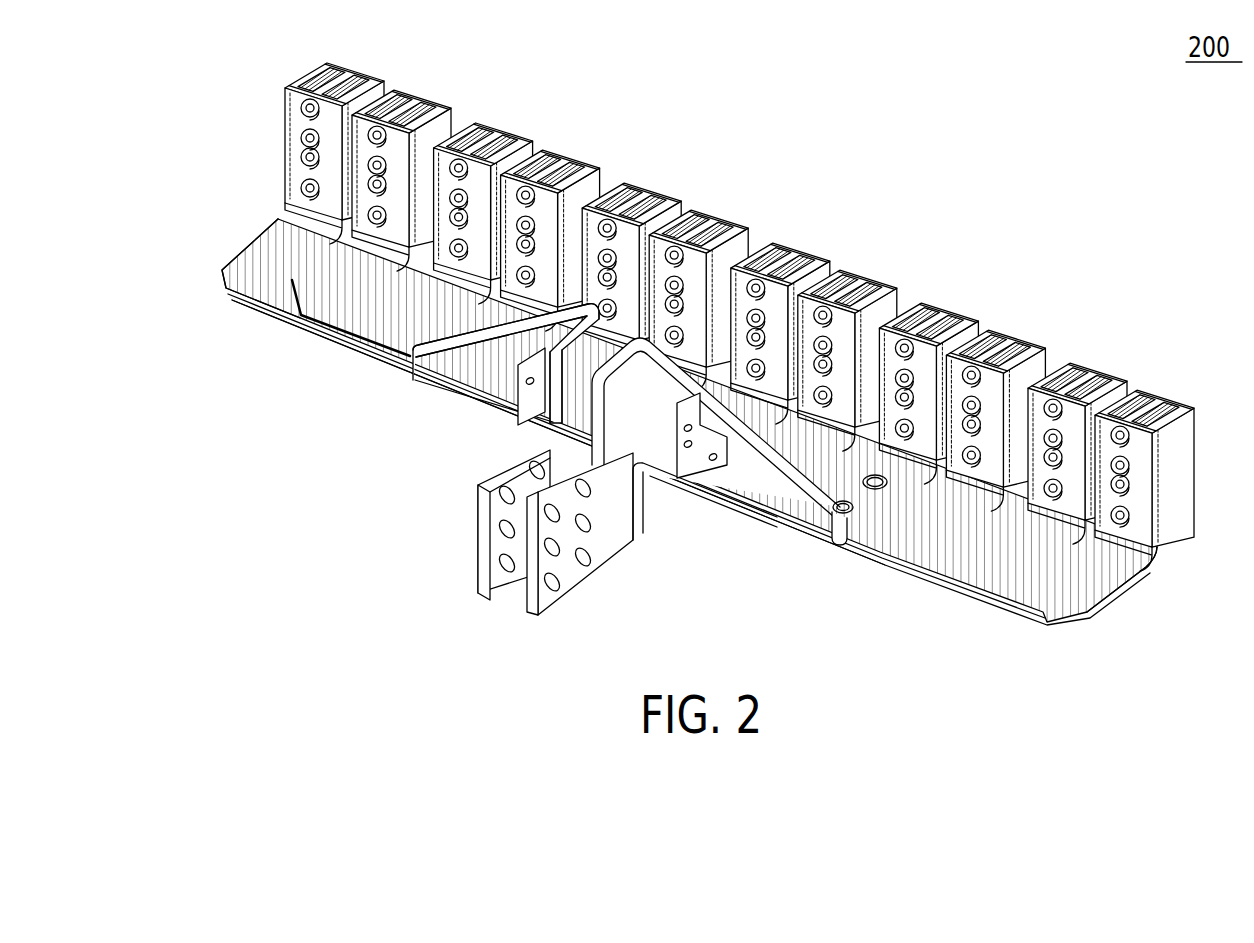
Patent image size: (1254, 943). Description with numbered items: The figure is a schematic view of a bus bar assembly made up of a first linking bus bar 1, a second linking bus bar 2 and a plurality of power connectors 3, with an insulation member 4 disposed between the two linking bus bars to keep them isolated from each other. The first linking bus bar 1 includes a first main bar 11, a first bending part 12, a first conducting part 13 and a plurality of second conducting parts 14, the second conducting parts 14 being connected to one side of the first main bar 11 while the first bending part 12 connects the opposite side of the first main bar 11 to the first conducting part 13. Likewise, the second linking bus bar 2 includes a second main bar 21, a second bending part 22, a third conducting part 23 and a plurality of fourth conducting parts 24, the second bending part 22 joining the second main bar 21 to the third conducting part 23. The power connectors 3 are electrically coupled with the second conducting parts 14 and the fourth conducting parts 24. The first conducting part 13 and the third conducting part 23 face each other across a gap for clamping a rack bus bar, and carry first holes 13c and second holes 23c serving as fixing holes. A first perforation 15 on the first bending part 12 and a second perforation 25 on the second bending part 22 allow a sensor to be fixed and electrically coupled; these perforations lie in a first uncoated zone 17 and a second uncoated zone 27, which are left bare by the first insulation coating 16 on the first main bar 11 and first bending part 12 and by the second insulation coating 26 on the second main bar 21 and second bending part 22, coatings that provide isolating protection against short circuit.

The first linking bus bar 1 is at (1114, 610).
The second linking bus bar 2 is at (213, 247).
The power connectors 3 is at (800, 250).
The insulation member 4 is at (288, 306).
The first main bar 11 is at (905, 542).
The first bending part 12 is at (787, 503).
The first conducting part 13 is at (607, 537).
The first holes 13c is at (557, 590).
The second conducting parts 14 is at (1112, 500).
The first perforation 15 is at (690, 453).
The first insulation coating 16 is at (960, 553).
The first uncoated zone 17 is at (718, 480).
The second main bar 21 is at (253, 290).
The second bending part 22 is at (413, 380).
The third conducting part 23 is at (497, 513).
The second holes 23c is at (510, 582).
The fourth conducting parts 24 is at (295, 158).
The second perforation 25 is at (488, 405).
The second insulation coating 26 is at (467, 362).
The second uncoated zone 27 is at (533, 402).